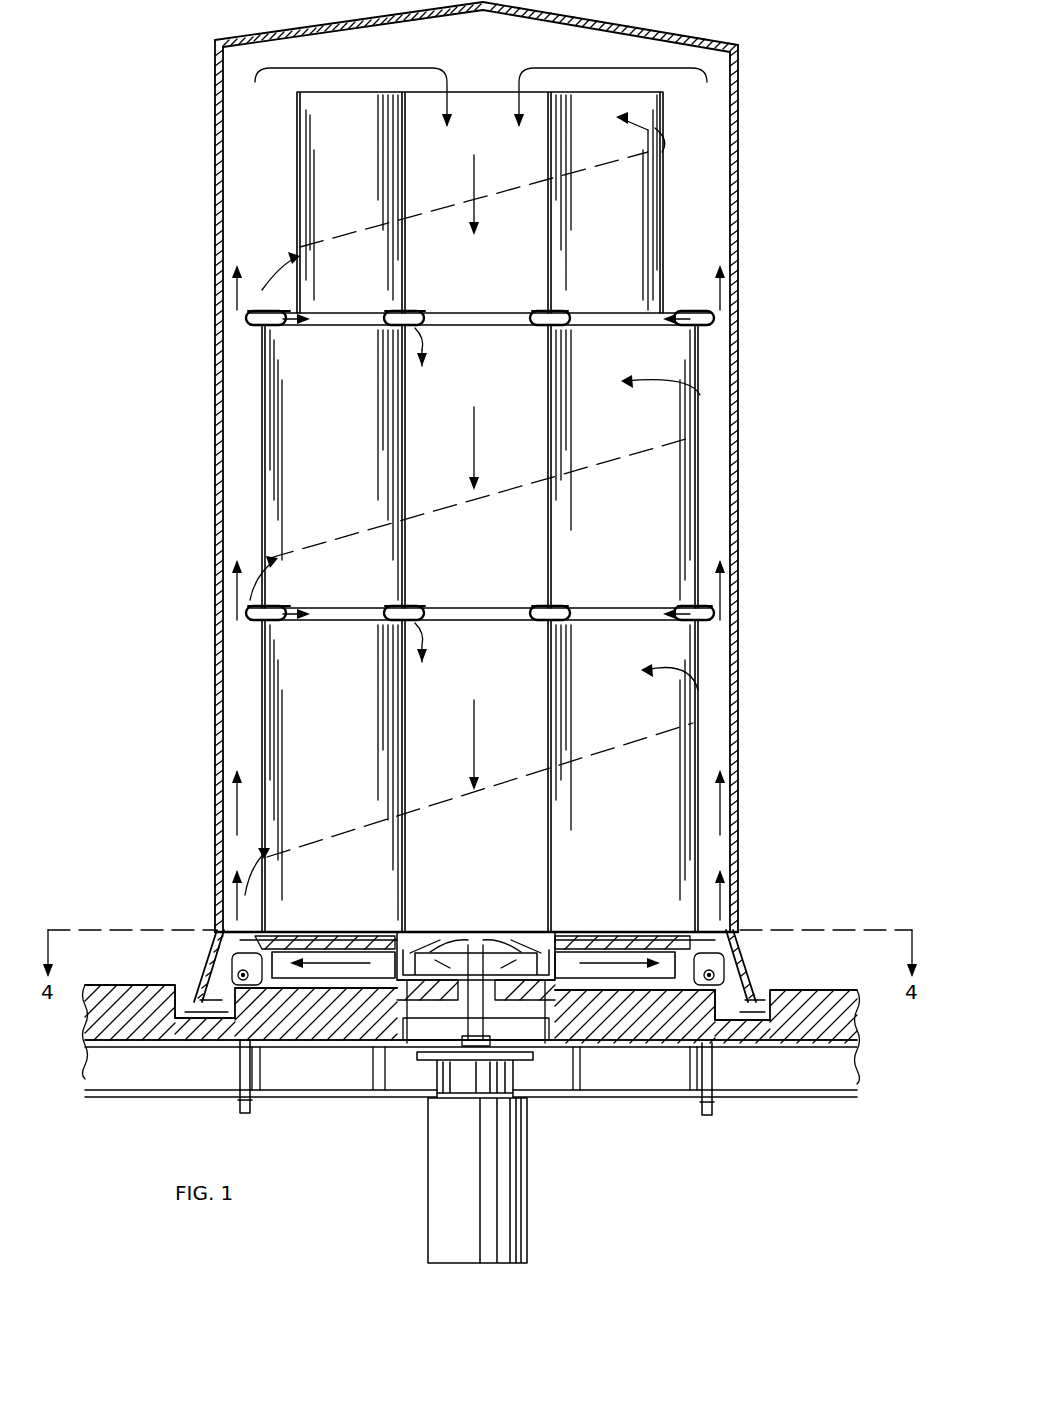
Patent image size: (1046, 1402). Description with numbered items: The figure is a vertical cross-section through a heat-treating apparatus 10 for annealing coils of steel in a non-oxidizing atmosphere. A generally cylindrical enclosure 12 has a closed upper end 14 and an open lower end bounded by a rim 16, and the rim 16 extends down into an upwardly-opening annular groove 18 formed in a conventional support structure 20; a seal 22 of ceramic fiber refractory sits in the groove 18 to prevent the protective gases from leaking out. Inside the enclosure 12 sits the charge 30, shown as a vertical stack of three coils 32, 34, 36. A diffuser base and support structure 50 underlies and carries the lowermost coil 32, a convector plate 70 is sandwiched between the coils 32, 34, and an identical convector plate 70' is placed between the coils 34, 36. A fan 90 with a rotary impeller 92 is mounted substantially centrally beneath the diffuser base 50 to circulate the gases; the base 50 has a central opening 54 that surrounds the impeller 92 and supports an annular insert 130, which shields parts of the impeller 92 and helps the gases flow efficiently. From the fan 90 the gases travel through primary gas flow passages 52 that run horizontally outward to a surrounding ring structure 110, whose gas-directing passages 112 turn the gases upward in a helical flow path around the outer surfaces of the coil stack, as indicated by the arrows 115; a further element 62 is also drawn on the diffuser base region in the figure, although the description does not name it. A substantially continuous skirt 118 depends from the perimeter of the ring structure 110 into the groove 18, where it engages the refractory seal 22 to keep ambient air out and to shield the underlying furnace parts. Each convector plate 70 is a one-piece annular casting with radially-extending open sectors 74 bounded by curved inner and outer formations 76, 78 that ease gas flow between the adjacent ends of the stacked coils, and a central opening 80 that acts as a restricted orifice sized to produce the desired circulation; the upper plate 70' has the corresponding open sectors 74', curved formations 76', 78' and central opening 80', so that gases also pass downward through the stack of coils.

The heat-treating apparatus 10 is at (160, 398).
The enclosure 12 is at (738, 460).
The closed upper end 14 is at (606, 27).
The rim 16 is at (175, 1032).
The annular groove 18 is at (178, 985).
The support structure 20 is at (830, 987).
The seal 22 is at (200, 1014).
The charge 30 is at (705, 182).
The lowermost coil 32 is at (652, 790).
The middle coil 34 is at (650, 545).
The uppermost coil 36 is at (625, 275).
The diffuser base and support structure 50 is at (620, 950).
The primary gas flow passages 52 is at (320, 1000).
The central opening 54 is at (468, 935).
The seal 62 is at (350, 940).
The convector plate 70 is at (523, 589).
The convector plate 70' is at (526, 305).
The open sectors 74 is at (515, 596).
The open sectors 74' is at (381, 294).
The curved inner formations 76 is at (511, 595).
The curved inner formations 76' is at (533, 291).
The curved outer formations 78 is at (226, 619).
The curved outer formations 78' is at (226, 304).
The central opening 80 is at (446, 642).
The central opening 80' is at (449, 347).
The fan 90 is at (440, 1000).
The rotary impeller 92 is at (480, 935).
The ring structure 110 is at (718, 960).
The gas-directing passages 112 is at (216, 935).
The arrows 115 is at (650, 126).
The skirt 118 is at (248, 1062).
The annular insert 130 is at (406, 930).